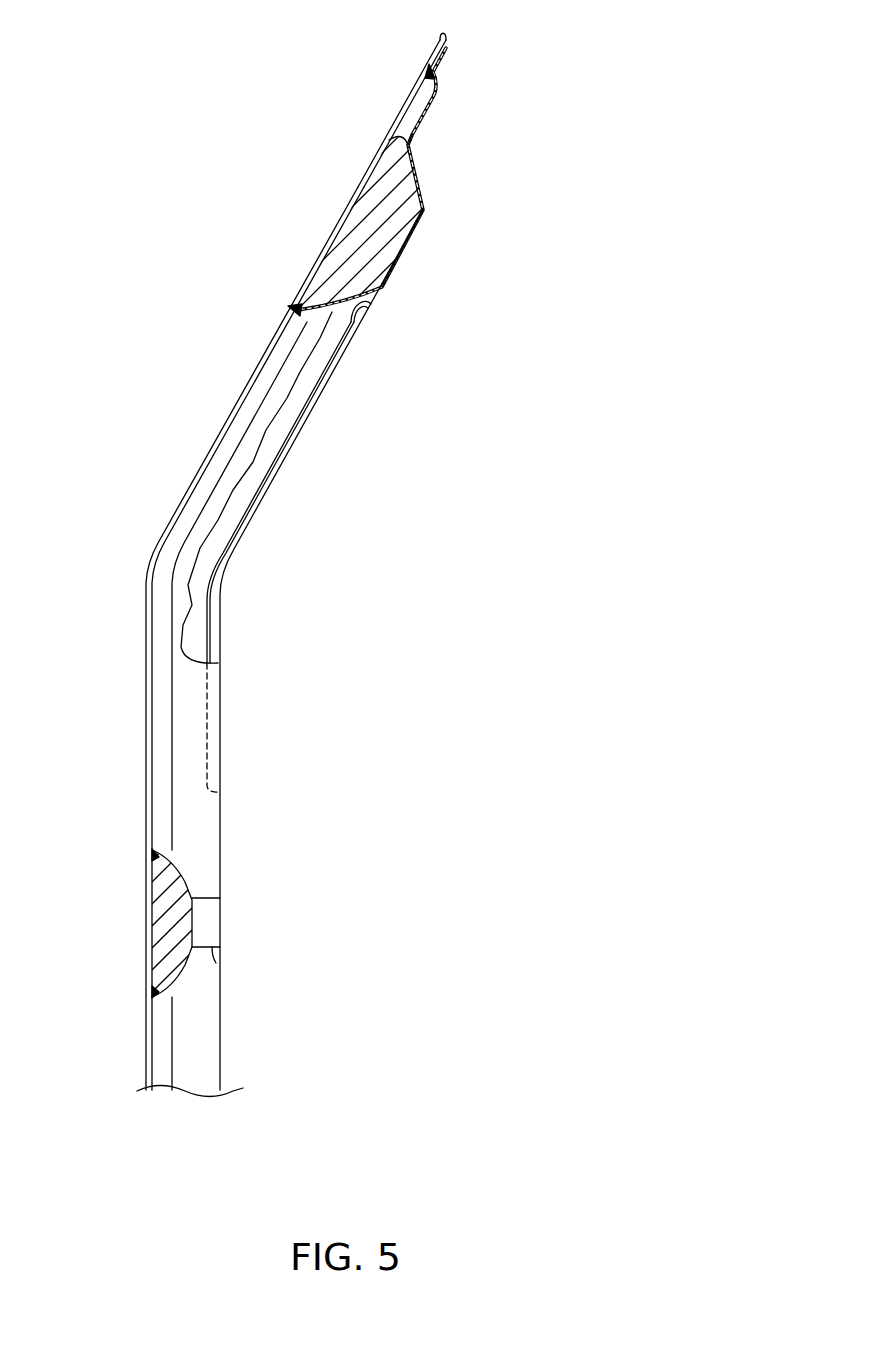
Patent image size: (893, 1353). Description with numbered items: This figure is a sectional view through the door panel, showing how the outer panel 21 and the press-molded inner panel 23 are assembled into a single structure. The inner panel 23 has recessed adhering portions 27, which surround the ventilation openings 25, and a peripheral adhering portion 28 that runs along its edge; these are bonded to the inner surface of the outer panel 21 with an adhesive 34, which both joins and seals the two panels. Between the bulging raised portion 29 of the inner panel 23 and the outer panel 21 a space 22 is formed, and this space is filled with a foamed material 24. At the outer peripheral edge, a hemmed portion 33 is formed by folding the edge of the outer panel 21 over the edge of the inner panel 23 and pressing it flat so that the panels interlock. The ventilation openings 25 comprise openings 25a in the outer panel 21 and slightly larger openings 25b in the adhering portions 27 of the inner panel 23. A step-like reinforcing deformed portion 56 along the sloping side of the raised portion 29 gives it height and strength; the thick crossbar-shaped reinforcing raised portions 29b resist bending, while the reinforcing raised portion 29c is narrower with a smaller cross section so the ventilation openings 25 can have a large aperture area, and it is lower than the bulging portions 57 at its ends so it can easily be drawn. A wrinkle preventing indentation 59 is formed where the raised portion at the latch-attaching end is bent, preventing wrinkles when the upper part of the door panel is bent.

The outer panel 21 is at (400, 97).
The space 22 is at (402, 122).
The inner panel 23 is at (435, 115).
The foamed material 24 is at (375, 207).
The ventilation openings 25 is at (205, 462).
The ventilation openings 25a is at (265, 352).
The ventilation openings 25b is at (313, 382).
The adhering portions 27 is at (300, 322).
The adhering portion 28 is at (433, 72).
The raised portion 29 is at (430, 210).
The reinforcing raised portions 29b is at (402, 252).
The reinforcing raised portion 29c is at (207, 907).
The hemmed portion 33 is at (447, 43).
The adhesive 34 is at (292, 304).
The reinforcing deformed portion 56 is at (412, 143).
The bulging portions 57 is at (213, 952).
The wrinkle preventing indentation 59 is at (287, 445).